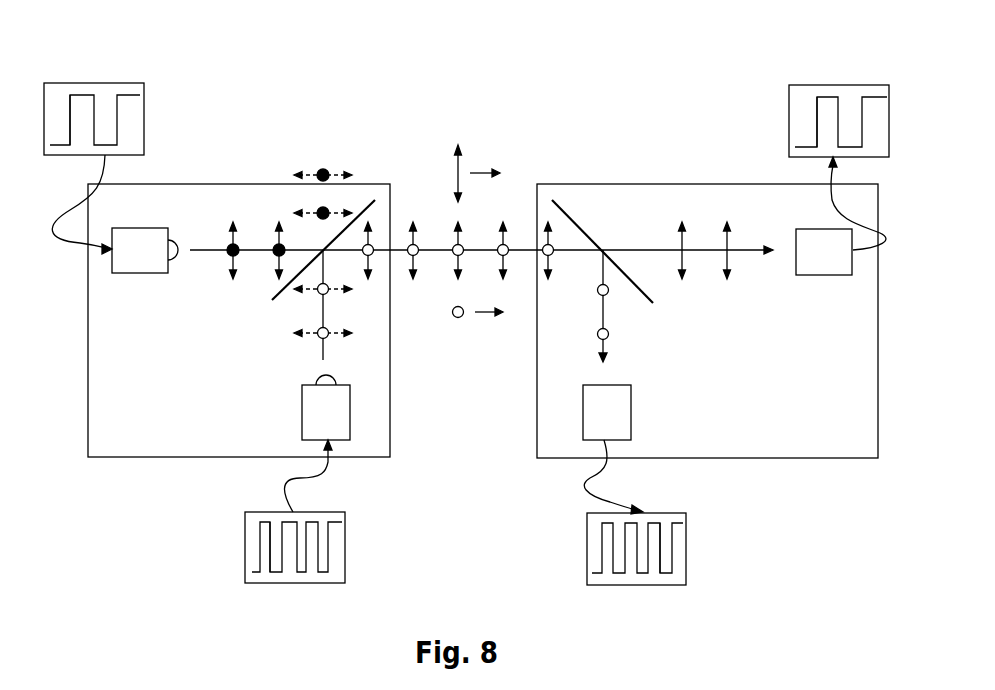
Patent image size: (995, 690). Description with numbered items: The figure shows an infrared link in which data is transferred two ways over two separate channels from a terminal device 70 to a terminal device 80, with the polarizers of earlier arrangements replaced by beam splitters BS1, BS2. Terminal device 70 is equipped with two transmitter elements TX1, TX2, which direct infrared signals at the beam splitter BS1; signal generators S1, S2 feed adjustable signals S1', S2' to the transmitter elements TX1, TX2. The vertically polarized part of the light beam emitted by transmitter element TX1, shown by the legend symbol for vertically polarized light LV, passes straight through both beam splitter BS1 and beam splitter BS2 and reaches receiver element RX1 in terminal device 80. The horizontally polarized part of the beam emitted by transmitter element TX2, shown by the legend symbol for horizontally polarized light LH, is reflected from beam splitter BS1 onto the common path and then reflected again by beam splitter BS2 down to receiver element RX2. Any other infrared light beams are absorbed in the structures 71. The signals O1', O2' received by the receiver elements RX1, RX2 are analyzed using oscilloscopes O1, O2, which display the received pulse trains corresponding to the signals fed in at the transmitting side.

The terminal device 70 is at (267, 183).
The structures 71 is at (330, 168).
The terminal device 80 is at (682, 185).
The beam splitter BS1 is at (280, 287).
The beam splitter BS2 is at (643, 290).
The transmitter element TX1 is at (145, 250).
The transmitter element TX2 is at (326, 407).
The receiver element RX1 is at (824, 252).
The receiver element RX2 is at (607, 412).
The vertically polarized light LV is at (478, 172).
The horizontally polarized light LH is at (478, 335).
The signal generator S1 is at (134, 168).
The adjustable signal S1' is at (104, 78).
The signal generator S2 is at (249, 511).
The adjustable signal S2' is at (235, 571).
The oscilloscope O1 is at (800, 167).
The received signal O1' is at (783, 89).
The oscilloscope O2 is at (679, 512).
The received signal O2' is at (711, 570).